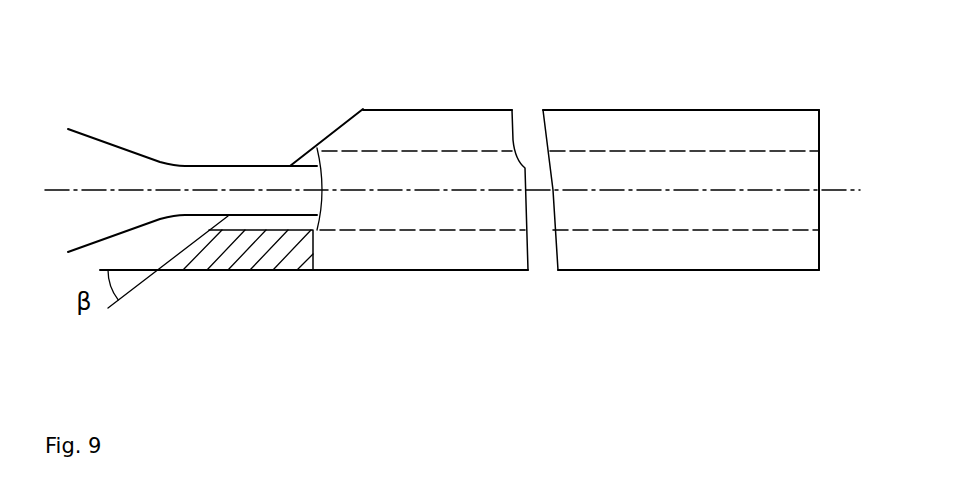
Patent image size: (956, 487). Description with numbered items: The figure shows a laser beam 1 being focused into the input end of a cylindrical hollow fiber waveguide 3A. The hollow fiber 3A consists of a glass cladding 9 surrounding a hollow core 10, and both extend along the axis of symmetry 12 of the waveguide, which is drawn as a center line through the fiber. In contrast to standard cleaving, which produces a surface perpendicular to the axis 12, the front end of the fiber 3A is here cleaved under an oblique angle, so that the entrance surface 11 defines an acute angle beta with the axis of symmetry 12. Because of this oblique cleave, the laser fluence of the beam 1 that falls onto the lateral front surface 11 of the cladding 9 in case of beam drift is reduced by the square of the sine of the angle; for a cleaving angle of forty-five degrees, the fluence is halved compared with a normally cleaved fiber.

The laser beam 1 is at (108, 143).
The entrance surface 11 is at (338, 128).
The glass cladding 9 is at (347, 250).
The hollow core 10 is at (443, 212).
The axis of symmetry 12 is at (838, 192).
The hollow fiber waveguide 3A is at (493, 278).